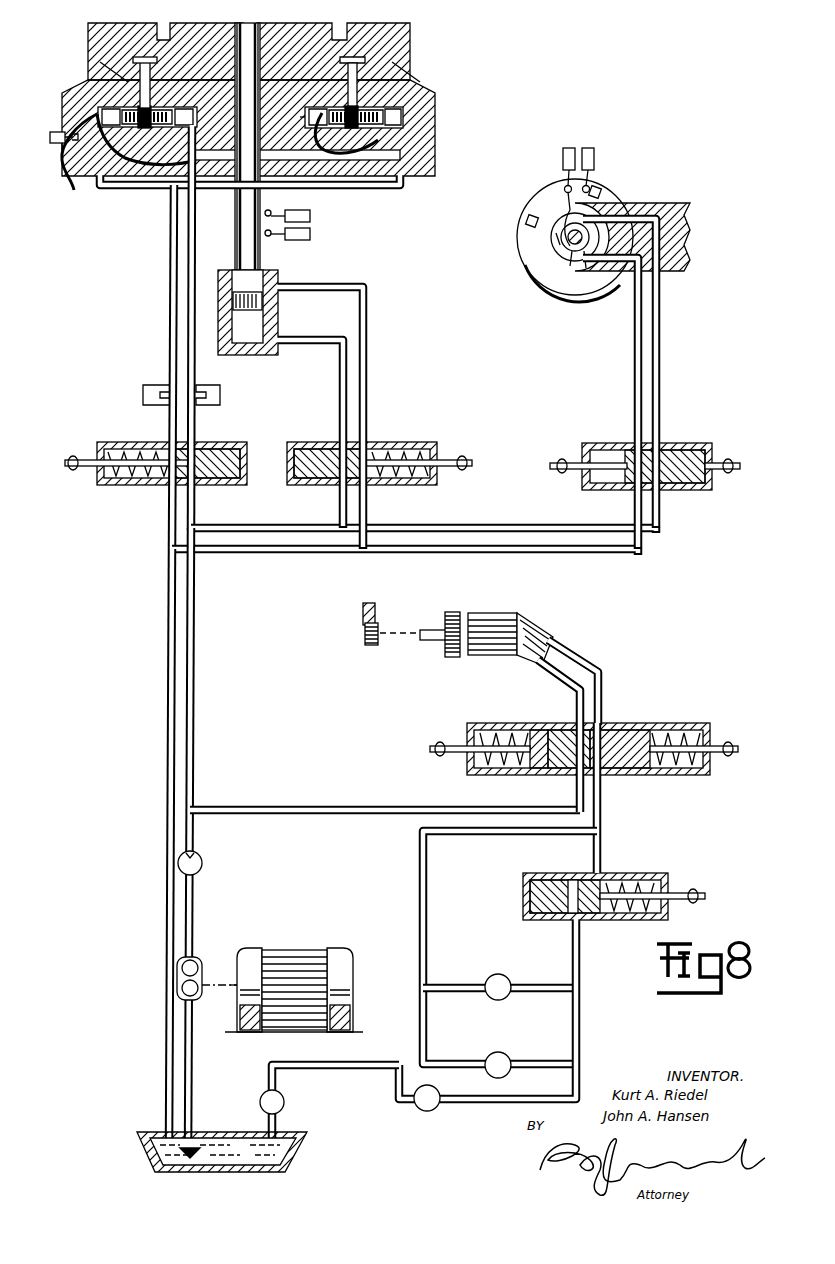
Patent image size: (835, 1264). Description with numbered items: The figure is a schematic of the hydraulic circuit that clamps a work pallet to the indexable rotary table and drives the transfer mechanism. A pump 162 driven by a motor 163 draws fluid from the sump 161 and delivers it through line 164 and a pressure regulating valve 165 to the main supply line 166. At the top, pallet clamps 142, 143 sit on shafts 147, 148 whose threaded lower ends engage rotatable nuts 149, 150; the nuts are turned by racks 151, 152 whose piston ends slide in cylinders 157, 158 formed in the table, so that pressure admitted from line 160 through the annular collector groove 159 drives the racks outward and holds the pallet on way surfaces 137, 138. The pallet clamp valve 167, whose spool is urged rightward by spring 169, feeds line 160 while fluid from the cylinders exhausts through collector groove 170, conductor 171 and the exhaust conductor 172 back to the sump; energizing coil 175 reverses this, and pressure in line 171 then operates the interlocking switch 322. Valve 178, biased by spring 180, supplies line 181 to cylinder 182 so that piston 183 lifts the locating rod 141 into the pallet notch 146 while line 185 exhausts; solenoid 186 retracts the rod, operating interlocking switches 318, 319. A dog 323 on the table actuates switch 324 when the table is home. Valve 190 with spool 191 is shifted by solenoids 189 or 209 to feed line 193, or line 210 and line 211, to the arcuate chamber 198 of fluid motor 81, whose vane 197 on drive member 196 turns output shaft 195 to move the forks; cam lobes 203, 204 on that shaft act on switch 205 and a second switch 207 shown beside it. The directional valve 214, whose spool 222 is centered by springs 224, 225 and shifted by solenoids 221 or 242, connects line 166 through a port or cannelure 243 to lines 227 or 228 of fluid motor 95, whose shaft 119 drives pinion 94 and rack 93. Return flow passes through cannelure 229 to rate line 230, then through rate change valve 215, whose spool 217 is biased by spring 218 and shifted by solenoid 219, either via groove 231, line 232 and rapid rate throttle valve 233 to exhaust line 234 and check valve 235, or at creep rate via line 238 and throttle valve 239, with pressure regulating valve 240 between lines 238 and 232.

The fluid motor 81 is at (629, 199).
The rack 93 is at (363, 610).
The pinion 94 is at (368, 648).
The fluid motor 95 is at (490, 616).
The motor shaft 119 is at (424, 640).
The pallet receiving way surface 137 is at (100, 65).
The pallet receiving way surface 138 is at (405, 67).
The pallet locating rod 141 is at (238, 234).
The pallet clamp 142 is at (145, 57).
The pallet clamp 143 is at (365, 60).
The locating notch 146 is at (262, 58).
The vertically movable shaft 147 is at (140, 100).
The vertically movable shaft 148 is at (348, 94).
The rotatable nut 149 is at (140, 128).
The rotatable nut 150 is at (354, 135).
The axially slidable rack 151 is at (71, 152).
The axially slidable rack 152 is at (403, 118).
The hydraulic cylinder 157 is at (146, 146).
The hydraulic cylinder 158 is at (300, 158).
The annular collector groove 159 is at (198, 120).
The line 160 is at (197, 210).
The sump 161 is at (159, 1126).
The pump 162 is at (203, 958).
The motor 163 is at (350, 978).
The hydraulic line 164 is at (196, 916).
The pressure regulating valve 165 is at (202, 863).
The main supply line 166 is at (466, 530).
The pallet clamp valve 167 is at (158, 498).
The spring 169 is at (126, 452).
The annular collector groove 170 is at (80, 186).
The conductor 171 is at (170, 242).
The exhaust conductor 172 is at (384, 552).
The coil 175 is at (68, 472).
The valve 178 is at (370, 498).
The spring 180 is at (396, 452).
The hydraulic line 181 is at (343, 370).
The hydraulic cylinder 182 is at (252, 332).
The piston 183 is at (262, 300).
The line 185 is at (367, 348).
The solenoid 186 is at (466, 460).
The solenoid 189 is at (735, 462).
The valve 190 is at (668, 433).
The valve spool 191 is at (660, 490).
The line 193 is at (660, 298).
The output shaft 195 is at (563, 185).
The rotatable drive member 196 is at (570, 262).
The vane 197 is at (586, 272).
The arcuate hydraulic chamber 198 is at (553, 247).
The cam lobe 203 is at (530, 216).
The cam lobe 204 is at (601, 190).
The switch 205 is at (592, 146).
The connector 207 is at (569, 146).
The solenoid 209 is at (560, 474).
The line 210 is at (700, 488).
The hydraulic line 211 is at (638, 380).
The directional hydraulic valve 214 is at (612, 712).
The rate change valve 215 is at (606, 862).
The valve spool 217 is at (540, 896).
The spring 218 is at (605, 920).
The solenoid 219 is at (700, 894).
The solenoid 221 is at (732, 744).
The valve spool 222 is at (568, 775).
The spring 224 is at (508, 730).
The spring 225 is at (670, 730).
The line 227 is at (552, 678).
The line 228 is at (580, 670).
The cannelure 229 is at (560, 730).
The rate control line 230 is at (601, 798).
The valve spool groove 231 is at (535, 920).
The hydraulic line 232 is at (580, 1048).
The rapid rate throttle regulating valve 233 is at (418, 1110).
The exhaust line 234 is at (346, 1065).
The check valve 235 is at (284, 1098).
The line 238 is at (430, 858).
The creep rate throttle regulating valve 239 is at (506, 1054).
The pressure regulating valve 240 is at (490, 976).
The solenoid 242 is at (442, 756).
The valve spool cannelure 243 is at (630, 730).
The interlocking switch 318 is at (308, 222).
The interlocking switch 319 is at (305, 240).
The interlocking fluid actuated switch 322 is at (160, 384).
The dog 323 is at (58, 132).
The interlocking switch 324 is at (60, 146).